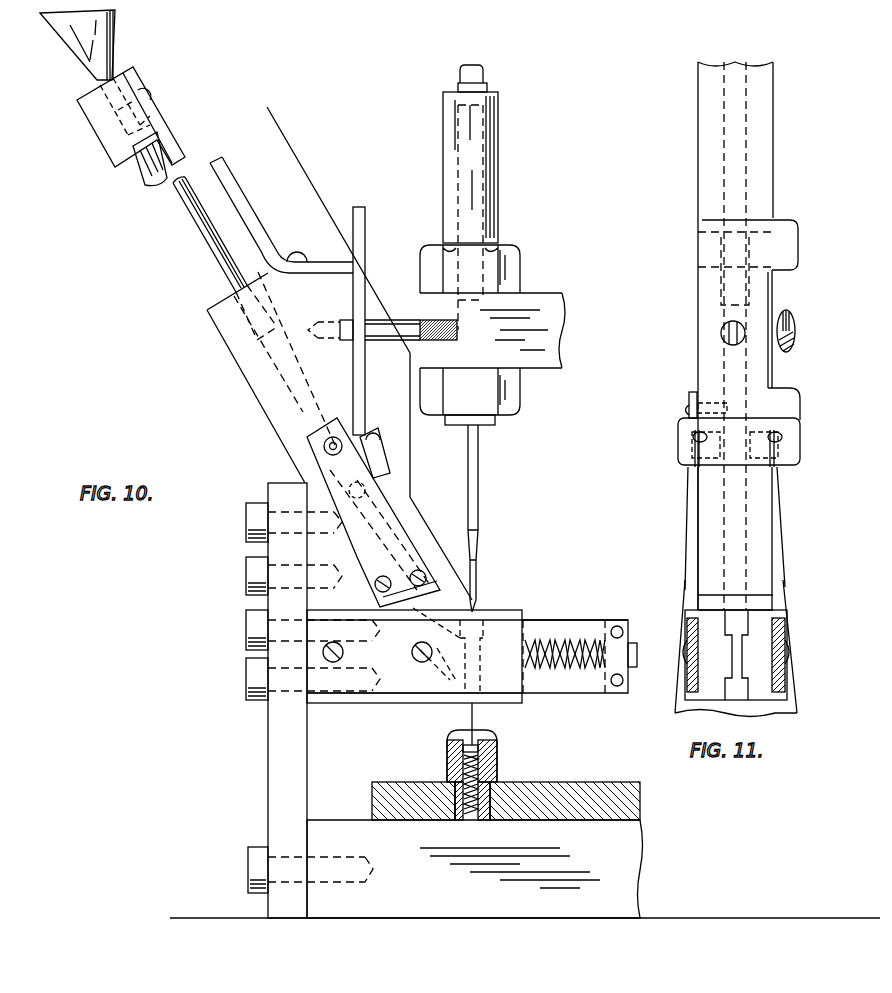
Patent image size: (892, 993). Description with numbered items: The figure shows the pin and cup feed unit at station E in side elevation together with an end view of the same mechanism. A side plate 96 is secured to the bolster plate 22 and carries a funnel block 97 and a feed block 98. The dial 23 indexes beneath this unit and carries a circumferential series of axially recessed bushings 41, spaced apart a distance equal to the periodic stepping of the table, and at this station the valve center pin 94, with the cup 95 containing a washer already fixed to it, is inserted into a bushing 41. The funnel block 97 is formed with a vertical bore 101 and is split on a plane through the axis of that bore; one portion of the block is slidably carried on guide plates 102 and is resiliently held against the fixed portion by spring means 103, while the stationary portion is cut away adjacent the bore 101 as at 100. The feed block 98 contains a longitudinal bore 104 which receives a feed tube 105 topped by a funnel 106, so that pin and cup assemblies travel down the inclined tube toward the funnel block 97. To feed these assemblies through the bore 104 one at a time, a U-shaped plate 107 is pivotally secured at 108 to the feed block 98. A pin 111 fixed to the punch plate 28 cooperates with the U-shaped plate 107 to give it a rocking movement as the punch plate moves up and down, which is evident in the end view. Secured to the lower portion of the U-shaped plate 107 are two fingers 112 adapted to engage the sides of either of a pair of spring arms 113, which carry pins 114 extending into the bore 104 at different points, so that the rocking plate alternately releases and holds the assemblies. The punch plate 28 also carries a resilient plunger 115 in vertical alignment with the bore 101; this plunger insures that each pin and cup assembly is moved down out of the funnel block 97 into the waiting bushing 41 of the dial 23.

In FIG. 10, the bolster plate 22 is at (420, 912).
In FIG. 10, the dial 23 is at (580, 782).
In FIG. 10, the punch plate 28 is at (550, 293).
In FIG. 10, the bushing 41 is at (498, 768).
In FIG. 10, the valve center pin 94 is at (457, 715).
In FIG. 10, the cup 95 is at (480, 748).
In FIG. 10, the side plate 96 is at (268, 768).
In FIG. 10, the funnel block 97 is at (398, 683).
In FIG. 10, the feed block 98 is at (255, 372).
In FIG. 10, the cut away 100 is at (436, 648).
In FIG. 10, the vertical bore 101 is at (487, 620).
In FIG. 11, the vertical bore 101 is at (730, 633).
In FIG. 11, the guide plates 102 is at (687, 683).
In FIG. 10, the spring means 103 is at (578, 638).
In FIG. 10, the longitudinal bore 104 is at (303, 413).
In FIG. 11, the longitudinal bore 104 is at (748, 557).
In FIG. 10, the feed tube 105 is at (188, 218).
In FIG. 10, the funnel 106 is at (115, 53).
In FIG. 10, the U-shaped plate 107 is at (367, 237).
In FIG. 11, the U-shaped plate 107 is at (707, 295).
In FIG. 10, the pivot 108 is at (368, 318).
In FIG. 11, the pivot 108 is at (723, 327).
In FIG. 10, the pin 111 is at (395, 322).
In FIG. 11, the pin 111 is at (797, 317).
In FIG. 10, the fingers 112 is at (377, 436).
In FIG. 11, the fingers 112 is at (698, 437).
In FIG. 11, the spring arms 113 is at (688, 512).
In FIG. 10, the pins 114 is at (333, 437).
In FIG. 11, the pins 114 is at (717, 410).
In FIG. 10, the resilient plunger 115 is at (480, 565).